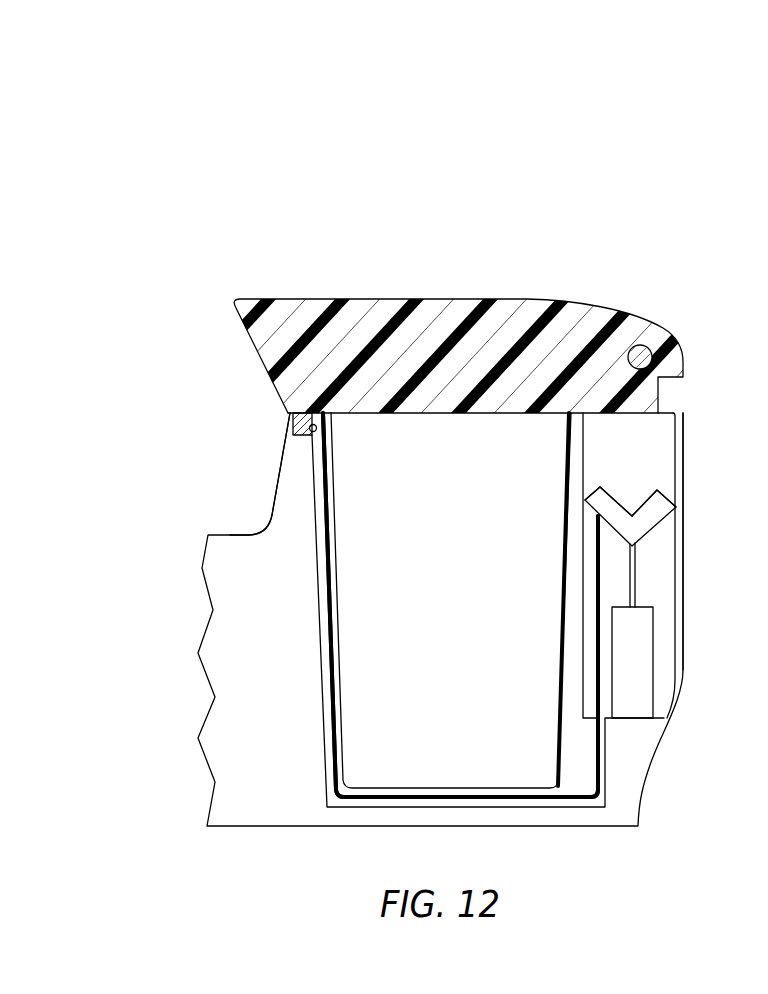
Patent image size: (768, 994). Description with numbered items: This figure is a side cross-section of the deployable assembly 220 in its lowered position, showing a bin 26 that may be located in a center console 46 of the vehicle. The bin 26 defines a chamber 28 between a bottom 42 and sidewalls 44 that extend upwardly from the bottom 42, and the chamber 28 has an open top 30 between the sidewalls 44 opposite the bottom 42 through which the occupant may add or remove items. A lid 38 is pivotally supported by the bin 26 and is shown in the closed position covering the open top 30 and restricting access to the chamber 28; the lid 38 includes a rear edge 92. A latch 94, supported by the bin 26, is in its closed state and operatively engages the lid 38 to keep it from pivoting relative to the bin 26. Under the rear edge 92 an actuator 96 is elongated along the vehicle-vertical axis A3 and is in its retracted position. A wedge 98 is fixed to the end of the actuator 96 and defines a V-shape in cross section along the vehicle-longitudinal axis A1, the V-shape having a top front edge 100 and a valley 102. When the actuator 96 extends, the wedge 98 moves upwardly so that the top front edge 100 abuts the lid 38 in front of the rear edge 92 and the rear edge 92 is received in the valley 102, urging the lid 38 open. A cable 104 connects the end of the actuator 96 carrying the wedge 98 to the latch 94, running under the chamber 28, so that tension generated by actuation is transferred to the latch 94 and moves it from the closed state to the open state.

The deployable assembly 220 is at (598, 223).
The lid 38 is at (358, 312).
The rear edge 92 is at (670, 378).
The latch 94 is at (318, 427).
The open top 30 is at (466, 446).
The top front edge 100 is at (600, 489).
The valley 102 is at (634, 514).
The wedge 98 is at (660, 500).
The cable 104 is at (326, 452).
The bin 26 is at (297, 494).
The sidewalls 44 is at (337, 637).
The center console 46 is at (240, 580).
The chamber 28 is at (466, 604).
The actuator 96 is at (640, 652).
The bottom 42 is at (455, 790).
The vehicle-longitudinal axis A1 is at (336, 867).
The vehicle-vertical axis A3 is at (138, 654).